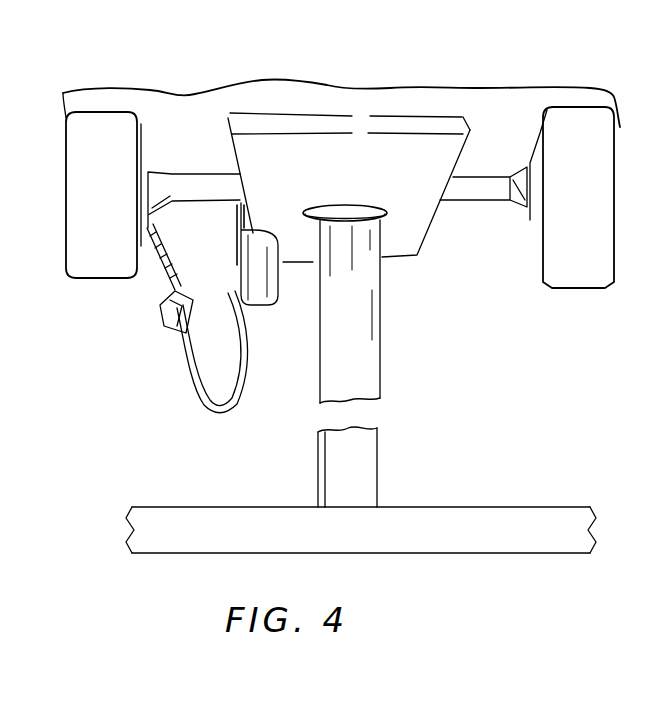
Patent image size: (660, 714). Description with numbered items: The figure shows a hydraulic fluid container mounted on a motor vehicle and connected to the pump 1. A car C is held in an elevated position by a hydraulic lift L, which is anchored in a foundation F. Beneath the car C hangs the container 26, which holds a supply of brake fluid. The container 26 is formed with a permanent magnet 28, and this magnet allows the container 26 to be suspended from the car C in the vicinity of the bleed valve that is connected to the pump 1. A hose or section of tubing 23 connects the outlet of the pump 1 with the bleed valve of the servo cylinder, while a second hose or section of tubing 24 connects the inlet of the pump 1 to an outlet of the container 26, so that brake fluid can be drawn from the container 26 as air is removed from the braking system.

The pump 1 is at (153, 315).
The hose or section of tubing 23 is at (157, 223).
The second hose or section of tubing 24 is at (240, 360).
The container 26 is at (267, 296).
The permanent magnet 28 is at (240, 229).
The car C is at (337, 72).
The hydraulic lift L is at (400, 303).
The foundation F is at (526, 522).